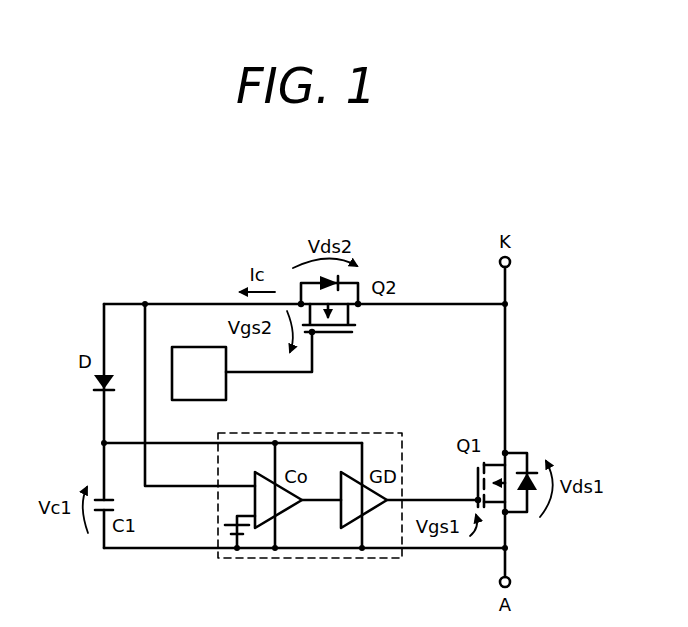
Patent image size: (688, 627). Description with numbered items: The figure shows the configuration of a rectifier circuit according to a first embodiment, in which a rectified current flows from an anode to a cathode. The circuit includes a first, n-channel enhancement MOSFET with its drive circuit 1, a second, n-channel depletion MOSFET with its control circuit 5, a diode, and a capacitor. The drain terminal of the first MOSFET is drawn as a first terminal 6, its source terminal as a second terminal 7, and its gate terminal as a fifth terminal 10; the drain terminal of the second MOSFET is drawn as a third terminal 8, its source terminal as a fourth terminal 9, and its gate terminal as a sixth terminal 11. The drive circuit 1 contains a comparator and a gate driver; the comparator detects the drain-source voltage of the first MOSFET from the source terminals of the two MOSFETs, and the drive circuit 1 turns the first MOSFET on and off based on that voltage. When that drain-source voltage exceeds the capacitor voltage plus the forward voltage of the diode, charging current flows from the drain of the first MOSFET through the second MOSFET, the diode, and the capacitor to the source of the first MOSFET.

The drive circuit 1 is at (372, 433).
The control circuit 5 is at (227, 393).
The first terminal 6 is at (507, 451).
The second terminal 7 is at (507, 514).
The third terminal 8 is at (360, 307).
The fourth terminal 9 is at (300, 303).
The fifth terminal 10 is at (476, 498).
The sixth terminal 11 is at (315, 335).